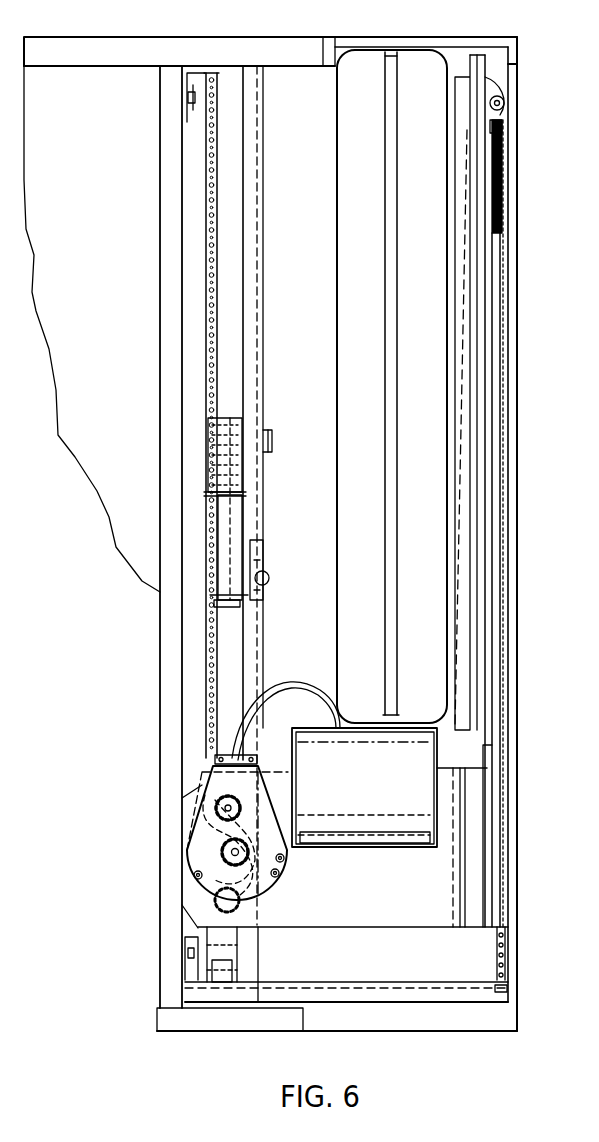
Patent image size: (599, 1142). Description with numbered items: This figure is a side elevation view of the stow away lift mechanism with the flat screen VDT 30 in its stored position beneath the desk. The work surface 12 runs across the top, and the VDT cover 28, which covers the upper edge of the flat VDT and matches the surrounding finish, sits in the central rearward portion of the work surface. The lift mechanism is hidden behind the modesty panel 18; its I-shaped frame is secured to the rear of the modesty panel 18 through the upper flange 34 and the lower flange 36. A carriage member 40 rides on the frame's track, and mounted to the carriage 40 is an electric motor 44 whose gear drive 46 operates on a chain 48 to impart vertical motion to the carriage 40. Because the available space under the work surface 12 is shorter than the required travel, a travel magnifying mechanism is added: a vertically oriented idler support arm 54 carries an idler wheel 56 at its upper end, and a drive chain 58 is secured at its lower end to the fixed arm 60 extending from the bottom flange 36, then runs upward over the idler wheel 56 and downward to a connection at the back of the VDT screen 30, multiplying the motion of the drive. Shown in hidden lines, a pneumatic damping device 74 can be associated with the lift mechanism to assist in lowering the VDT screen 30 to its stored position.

The work surface 12 is at (119, 37).
The modesty panel 18 is at (160, 170).
The VDT cover 28 is at (432, 37).
The flat screen VDT 30 is at (352, 326).
The flange 34 is at (187, 80).
The flange 36 is at (185, 952).
The carriage member 40 is at (473, 827).
The electric motor 44 is at (422, 830).
The gear drive 46 is at (272, 897).
The chain 48 is at (205, 645).
The idler support arm 54 is at (462, 138).
The idler wheel 56 is at (503, 106).
The drive chain 58 is at (497, 950).
The fixed arm 60 is at (455, 1005).
The pneumatic damping device 74 is at (238, 513).